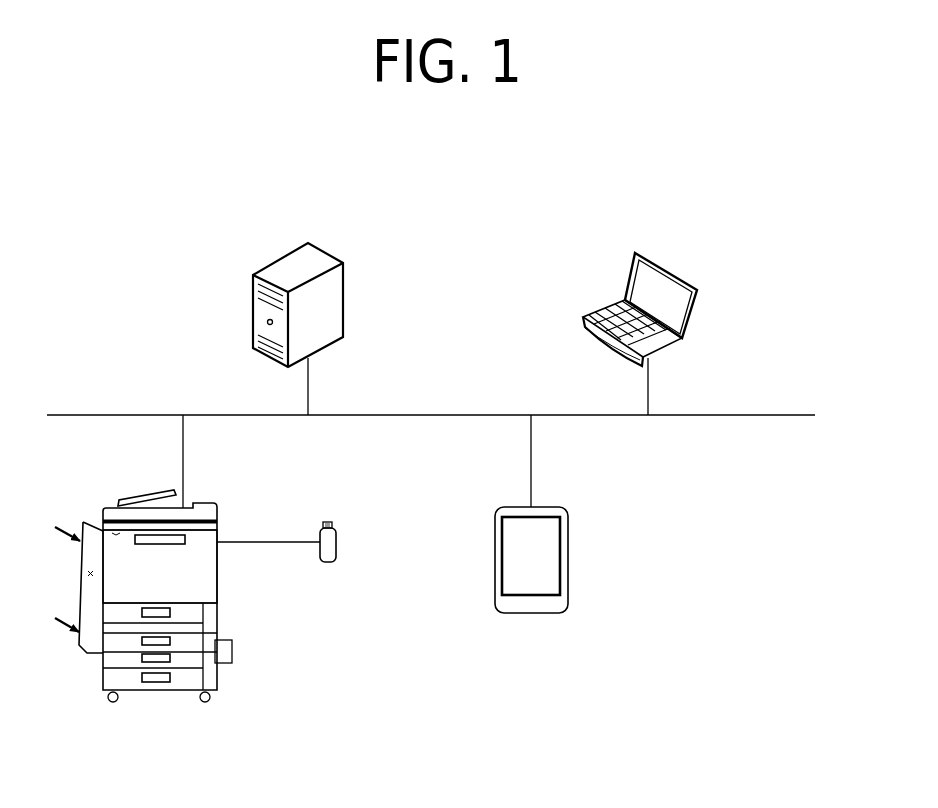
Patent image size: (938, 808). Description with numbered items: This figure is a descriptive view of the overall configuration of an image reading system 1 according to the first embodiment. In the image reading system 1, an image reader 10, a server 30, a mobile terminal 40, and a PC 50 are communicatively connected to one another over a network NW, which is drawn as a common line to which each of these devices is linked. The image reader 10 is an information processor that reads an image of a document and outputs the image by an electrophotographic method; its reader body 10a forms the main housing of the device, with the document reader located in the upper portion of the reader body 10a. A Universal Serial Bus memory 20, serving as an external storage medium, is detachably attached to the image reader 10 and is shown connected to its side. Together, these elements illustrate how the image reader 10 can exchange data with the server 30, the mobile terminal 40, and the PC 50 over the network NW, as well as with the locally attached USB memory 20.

The image reading system 1 is at (768, 245).
The image reader 10 is at (194, 558).
The reader body 10a is at (195, 567).
The Universal Serial Bus (USB) memory 20 is at (336, 552).
The server 30 is at (345, 280).
The mobile terminal 40 is at (542, 578).
The PC 50 is at (608, 312).
The network NW is at (757, 413).